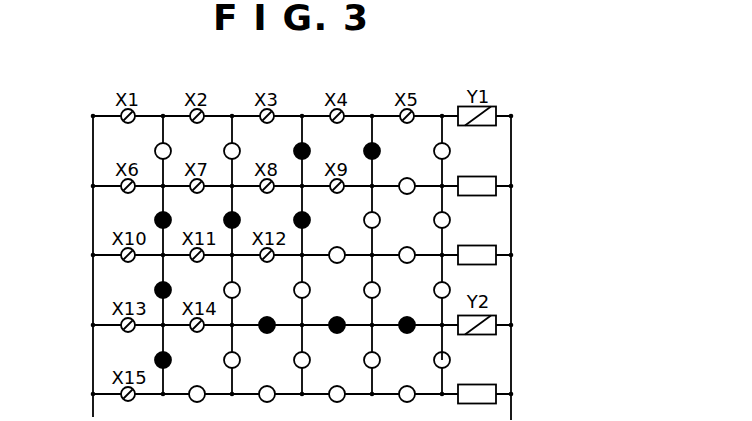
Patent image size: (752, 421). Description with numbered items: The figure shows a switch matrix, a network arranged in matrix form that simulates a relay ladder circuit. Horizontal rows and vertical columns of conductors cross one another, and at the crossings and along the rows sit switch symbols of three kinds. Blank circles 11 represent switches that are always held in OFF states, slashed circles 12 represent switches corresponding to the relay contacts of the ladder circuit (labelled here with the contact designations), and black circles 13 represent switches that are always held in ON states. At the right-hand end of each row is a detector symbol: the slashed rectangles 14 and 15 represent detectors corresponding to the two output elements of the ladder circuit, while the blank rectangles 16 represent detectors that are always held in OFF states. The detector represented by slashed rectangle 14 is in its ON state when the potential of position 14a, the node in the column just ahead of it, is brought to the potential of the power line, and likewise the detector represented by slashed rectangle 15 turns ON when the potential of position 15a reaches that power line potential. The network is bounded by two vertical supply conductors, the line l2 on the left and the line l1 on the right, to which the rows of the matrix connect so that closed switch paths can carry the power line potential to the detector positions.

The blank circle 11 is at (451, 152).
The slashed circle 12 is at (407, 123).
The black circle 13 is at (336, 317).
The slashed rectangle 14 is at (497, 110).
The position 14a is at (442, 112).
The slashed rectangle 15 is at (478, 336).
The position 15a is at (440, 331).
The blank rectangle 16 is at (470, 196).
The power supply line l1 is at (512, 380).
The power supply line l2 is at (91, 366).